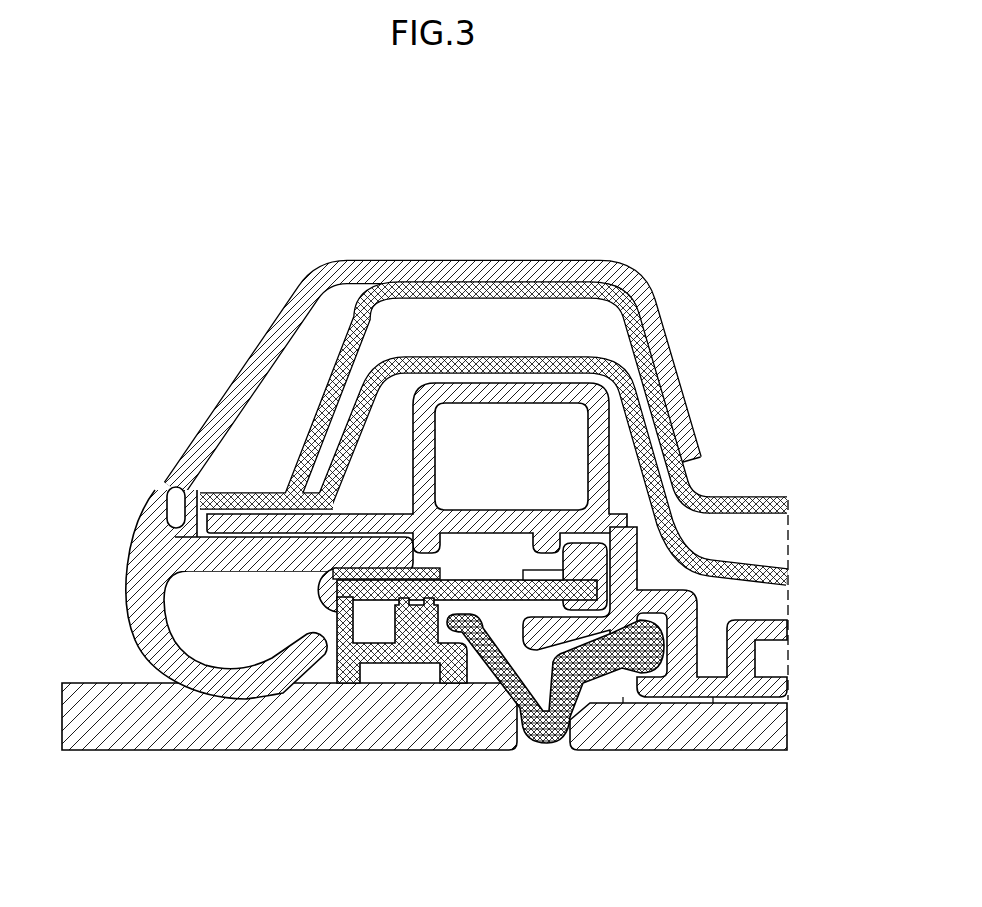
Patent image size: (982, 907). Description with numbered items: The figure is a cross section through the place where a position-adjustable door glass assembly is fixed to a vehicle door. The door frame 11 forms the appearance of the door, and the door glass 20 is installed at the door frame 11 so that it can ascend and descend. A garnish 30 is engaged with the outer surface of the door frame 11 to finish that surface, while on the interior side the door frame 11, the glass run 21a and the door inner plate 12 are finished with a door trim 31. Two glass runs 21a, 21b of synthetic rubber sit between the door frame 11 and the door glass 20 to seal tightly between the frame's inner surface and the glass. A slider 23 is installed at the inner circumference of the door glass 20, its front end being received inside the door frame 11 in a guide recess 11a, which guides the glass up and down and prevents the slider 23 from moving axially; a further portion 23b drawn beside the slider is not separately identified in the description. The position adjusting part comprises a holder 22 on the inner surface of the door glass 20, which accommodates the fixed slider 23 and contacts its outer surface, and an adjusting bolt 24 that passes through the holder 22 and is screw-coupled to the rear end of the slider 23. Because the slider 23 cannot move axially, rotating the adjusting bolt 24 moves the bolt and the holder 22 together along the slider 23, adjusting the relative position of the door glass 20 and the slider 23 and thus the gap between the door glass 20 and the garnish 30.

The door frame 11 is at (698, 543).
The guide recess 11a is at (630, 530).
The door inner plate 12 is at (750, 500).
The door glass 20 is at (275, 727).
The glass run 21a is at (150, 630).
The glass run 21b is at (585, 695).
The holder 22 is at (403, 653).
The slider 23 is at (507, 578).
The frame body 23b is at (610, 515).
The adjusting bolt 24 is at (345, 545).
The garnish 30 is at (712, 728).
The door trim 31 is at (337, 261).